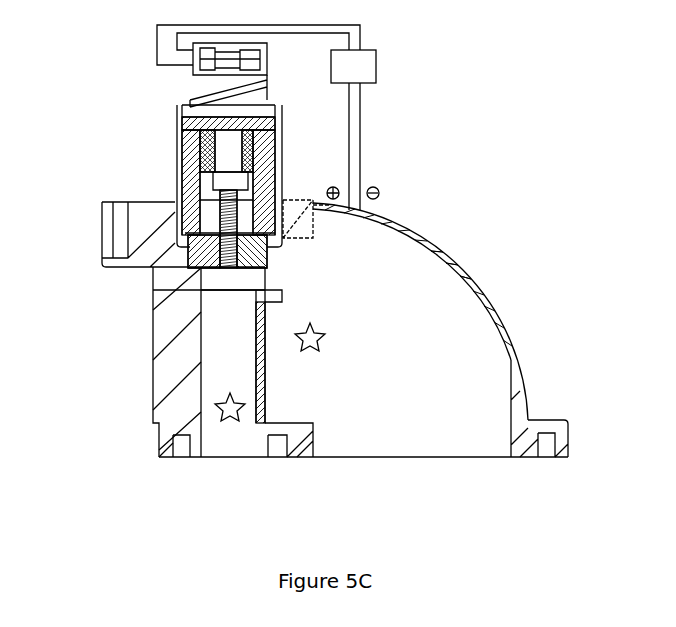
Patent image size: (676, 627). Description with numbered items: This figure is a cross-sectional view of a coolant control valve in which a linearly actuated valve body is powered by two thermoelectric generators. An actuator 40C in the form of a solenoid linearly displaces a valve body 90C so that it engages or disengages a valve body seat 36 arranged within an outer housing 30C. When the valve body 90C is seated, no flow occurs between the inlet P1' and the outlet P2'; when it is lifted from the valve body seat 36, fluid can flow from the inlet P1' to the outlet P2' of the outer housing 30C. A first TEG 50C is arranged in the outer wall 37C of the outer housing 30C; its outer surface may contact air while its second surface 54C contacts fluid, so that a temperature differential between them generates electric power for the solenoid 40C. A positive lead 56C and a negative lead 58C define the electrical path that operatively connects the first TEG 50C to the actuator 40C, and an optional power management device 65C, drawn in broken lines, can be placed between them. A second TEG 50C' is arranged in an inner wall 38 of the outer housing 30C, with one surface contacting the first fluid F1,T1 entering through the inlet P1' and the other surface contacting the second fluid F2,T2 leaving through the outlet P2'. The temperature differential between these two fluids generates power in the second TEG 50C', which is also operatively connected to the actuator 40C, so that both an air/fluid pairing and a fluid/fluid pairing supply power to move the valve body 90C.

The outer housing 30C is at (153, 415).
The valve body seat 36 is at (203, 287).
The inner wall 38 is at (260, 299).
The actuator 40C is at (178, 180).
The first TEG 50C is at (449, 310).
The second TEG 50C' is at (200, 373).
The second surface 54C is at (447, 257).
The outer wall 37C is at (502, 323).
The positive lead 56C is at (348, 110).
The negative lead 58C is at (360, 130).
The power management device 65C is at (376, 66).
The valve body 90C is at (200, 262).
The inlet P1' is at (176, 480).
The outlet P2' is at (415, 477).
The first fluid at first temperature F1,T1 is at (232, 416).
The second fluid at second temperature F2,T2 is at (315, 346).